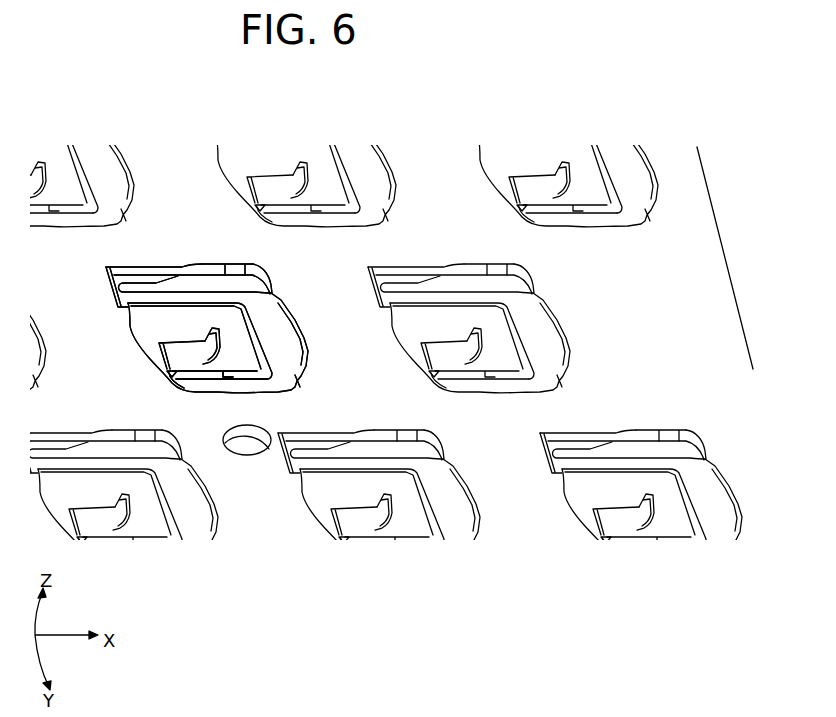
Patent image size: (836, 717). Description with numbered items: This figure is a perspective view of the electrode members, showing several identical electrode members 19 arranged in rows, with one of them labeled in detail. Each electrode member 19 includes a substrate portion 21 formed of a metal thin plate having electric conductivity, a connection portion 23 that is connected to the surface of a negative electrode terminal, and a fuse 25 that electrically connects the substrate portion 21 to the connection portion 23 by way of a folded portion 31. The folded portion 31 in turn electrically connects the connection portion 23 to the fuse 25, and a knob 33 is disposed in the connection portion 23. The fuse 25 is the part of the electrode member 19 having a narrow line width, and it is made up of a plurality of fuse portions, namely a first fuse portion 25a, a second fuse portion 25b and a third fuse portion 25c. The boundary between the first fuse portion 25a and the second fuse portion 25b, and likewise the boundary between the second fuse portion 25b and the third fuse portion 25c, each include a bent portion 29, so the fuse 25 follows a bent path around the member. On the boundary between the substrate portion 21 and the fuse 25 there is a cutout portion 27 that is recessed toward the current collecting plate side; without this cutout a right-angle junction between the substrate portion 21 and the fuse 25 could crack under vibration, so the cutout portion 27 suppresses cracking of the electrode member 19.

The electrode member 19 is at (183, 256).
The substrate portion 21 is at (130, 303).
The connection portion 23 is at (175, 352).
The fuse 25 is at (262, 345).
The first fuse portion 25a is at (190, 298).
The second fuse portion 25b is at (258, 326).
The third fuse portion 25c is at (233, 382).
The cutout portion 27 is at (130, 288).
The bent portion 29 is at (236, 302).
The folded portion 31 is at (173, 367).
The knob 33 is at (217, 340).